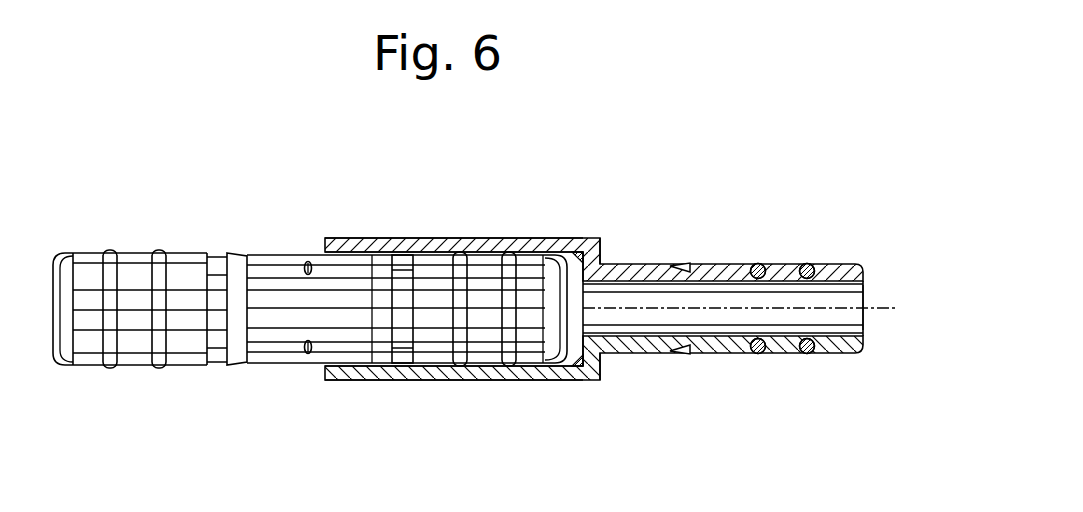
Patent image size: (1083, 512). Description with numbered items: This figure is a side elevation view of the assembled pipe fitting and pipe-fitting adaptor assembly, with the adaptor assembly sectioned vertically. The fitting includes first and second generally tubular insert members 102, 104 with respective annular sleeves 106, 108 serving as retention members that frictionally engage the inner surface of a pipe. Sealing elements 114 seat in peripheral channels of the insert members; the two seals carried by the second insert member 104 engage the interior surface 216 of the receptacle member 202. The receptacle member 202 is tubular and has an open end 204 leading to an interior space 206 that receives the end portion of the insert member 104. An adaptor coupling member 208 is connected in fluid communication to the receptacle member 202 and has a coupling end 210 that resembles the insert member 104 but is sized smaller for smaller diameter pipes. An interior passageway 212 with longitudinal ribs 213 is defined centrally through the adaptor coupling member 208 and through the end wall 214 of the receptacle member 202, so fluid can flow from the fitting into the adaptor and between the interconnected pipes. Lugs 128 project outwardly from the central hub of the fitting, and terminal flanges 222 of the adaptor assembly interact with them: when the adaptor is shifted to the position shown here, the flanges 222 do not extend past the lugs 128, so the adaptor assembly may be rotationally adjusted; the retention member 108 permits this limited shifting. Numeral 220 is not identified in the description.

The first insert member 102 is at (88, 253).
The second insert member 104 is at (537, 265).
The annular sleeve 106 is at (236, 255).
The annular sleeve 108 is at (382, 275).
The sealing elements 114 is at (158, 253).
The lugs 128 is at (308, 262).
The receptacle member 202 is at (457, 248).
The open end 204 is at (318, 370).
The interior space 206 is at (576, 265).
The adaptor coupling member 208 is at (650, 263).
The coupling end 210 is at (830, 264).
The interior passageway 212 is at (767, 317).
The longitudinal ribs 213 is at (864, 313).
The end wall 214 is at (603, 250).
The interior surface 216 is at (580, 375).
The lower sleeve wall 220 is at (424, 381).
The terminal flanges 222 is at (352, 238).